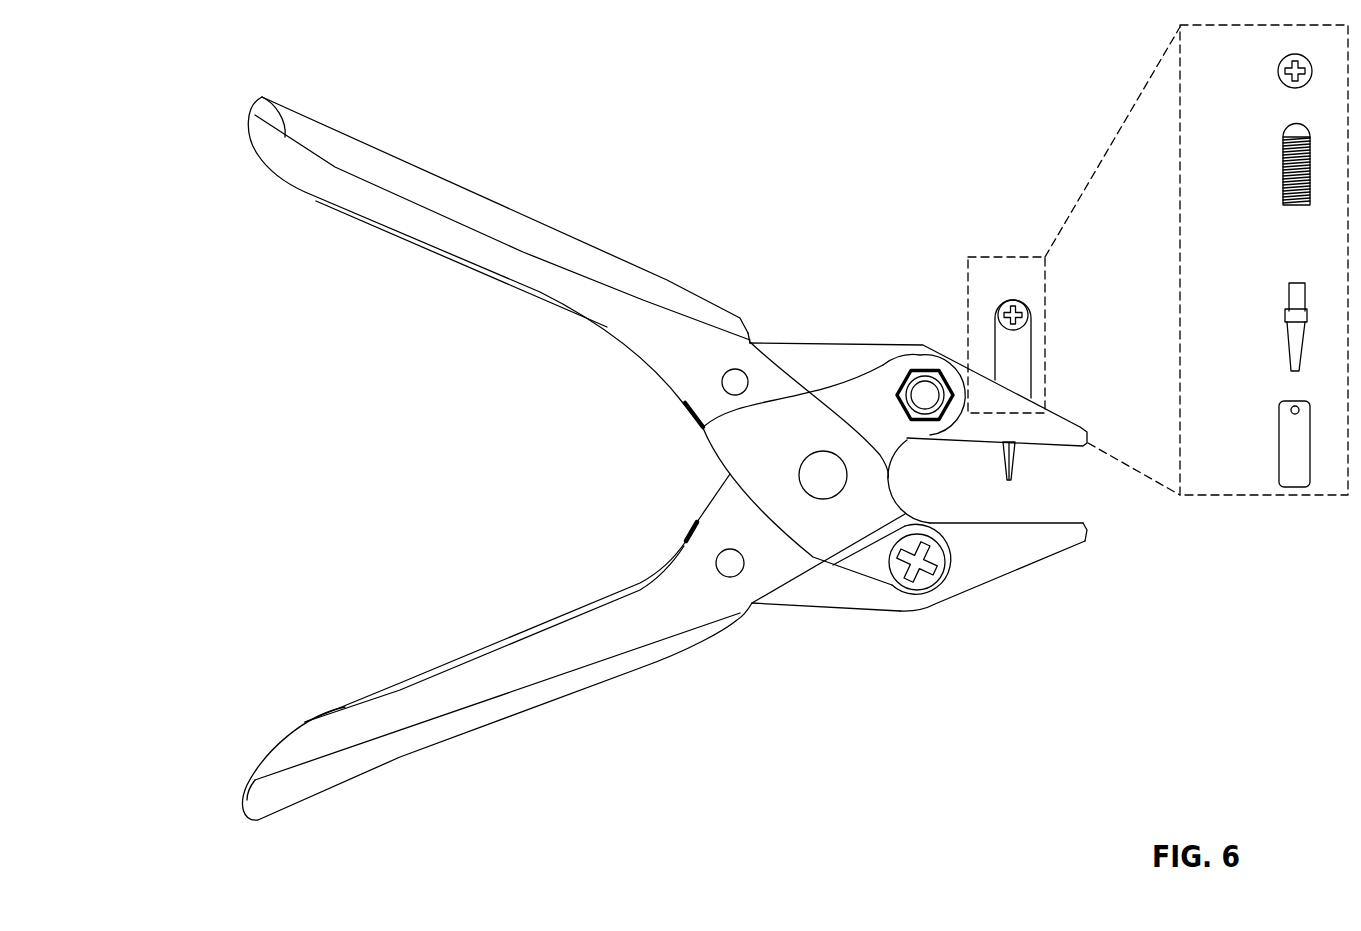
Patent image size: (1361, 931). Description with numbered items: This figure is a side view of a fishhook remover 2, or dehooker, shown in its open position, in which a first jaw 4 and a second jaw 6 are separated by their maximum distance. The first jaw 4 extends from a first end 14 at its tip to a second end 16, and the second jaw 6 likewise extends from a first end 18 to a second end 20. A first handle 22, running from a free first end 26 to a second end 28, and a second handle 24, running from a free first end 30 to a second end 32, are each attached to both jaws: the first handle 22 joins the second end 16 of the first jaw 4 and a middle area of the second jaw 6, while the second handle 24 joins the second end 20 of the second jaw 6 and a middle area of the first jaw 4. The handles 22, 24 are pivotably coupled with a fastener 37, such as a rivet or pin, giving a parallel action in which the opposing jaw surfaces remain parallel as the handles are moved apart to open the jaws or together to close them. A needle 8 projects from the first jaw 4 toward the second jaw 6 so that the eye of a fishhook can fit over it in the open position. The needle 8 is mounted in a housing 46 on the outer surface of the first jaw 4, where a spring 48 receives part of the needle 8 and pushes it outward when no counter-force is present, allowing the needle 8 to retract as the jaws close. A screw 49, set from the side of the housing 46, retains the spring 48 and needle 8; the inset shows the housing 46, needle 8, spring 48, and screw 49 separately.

The fishhook remover 2 is at (117, 37).
The first jaw 4 is at (1062, 440).
The second jaw 6 is at (1000, 560).
The needle 8 is at (1012, 470).
The first end 14 is at (1077, 427).
The second end 16 is at (687, 407).
The first end 18 is at (1087, 541).
The second end 20 is at (683, 535).
The first handle 22 is at (530, 250).
The second handle 24 is at (483, 702).
The first end 26 is at (263, 97).
The second end 28 is at (918, 568).
The first end 30 is at (255, 780).
The second end 32 is at (925, 395).
The fastener 37 is at (817, 480).
The housing 46 is at (1020, 362).
The biasing mechanism 48 is at (1283, 170).
The fastener 49 is at (1027, 310).